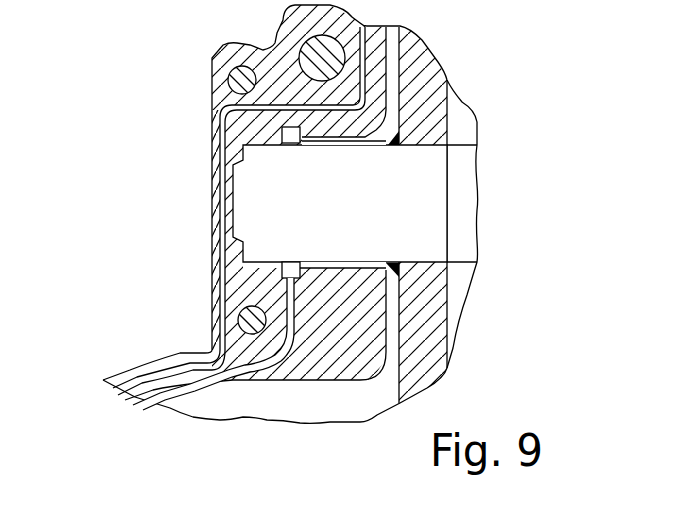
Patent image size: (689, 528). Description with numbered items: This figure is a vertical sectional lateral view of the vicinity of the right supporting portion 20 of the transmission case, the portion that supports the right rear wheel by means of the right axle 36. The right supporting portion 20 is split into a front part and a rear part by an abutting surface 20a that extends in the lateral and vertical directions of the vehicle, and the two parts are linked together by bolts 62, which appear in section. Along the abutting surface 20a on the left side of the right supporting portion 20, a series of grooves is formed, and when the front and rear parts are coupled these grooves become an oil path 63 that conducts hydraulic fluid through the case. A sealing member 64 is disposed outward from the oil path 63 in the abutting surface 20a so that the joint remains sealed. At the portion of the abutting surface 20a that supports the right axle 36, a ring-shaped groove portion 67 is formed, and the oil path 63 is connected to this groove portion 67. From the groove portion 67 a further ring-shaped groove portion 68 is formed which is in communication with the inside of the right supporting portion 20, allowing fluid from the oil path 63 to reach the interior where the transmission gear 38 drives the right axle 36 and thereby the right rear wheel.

The right supporting portion 20 is at (266, 214).
The abutting surface 20a is at (213, 118).
The right axle 36 is at (250, 194).
The transmission gear 38 is at (438, 296).
The bolt 62 is at (230, 74).
The oil path 63 is at (280, 357).
The sealing member 64 is at (221, 258).
The ring-shaped groove portion 67 is at (292, 262).
The ring-shaped groove portion 68 is at (337, 146).